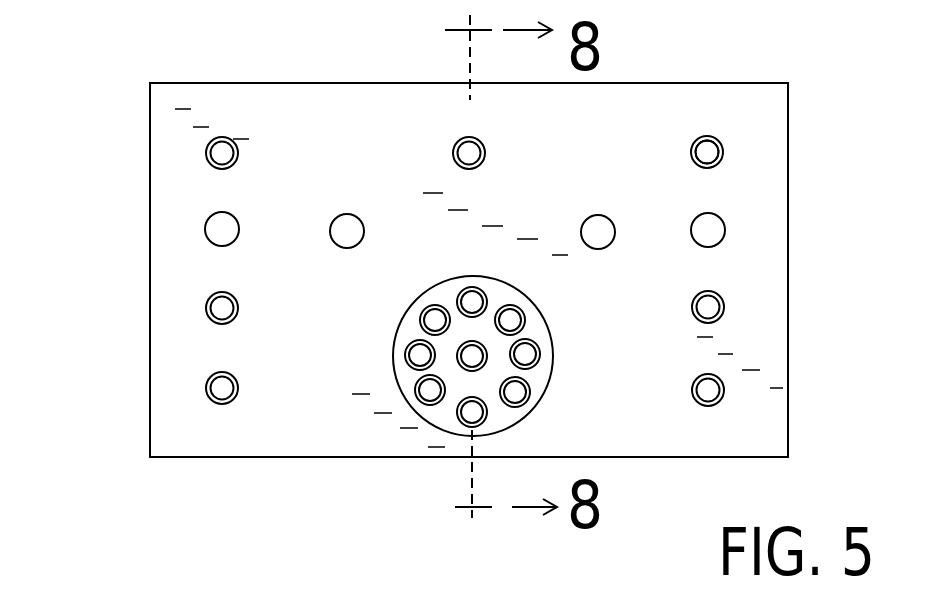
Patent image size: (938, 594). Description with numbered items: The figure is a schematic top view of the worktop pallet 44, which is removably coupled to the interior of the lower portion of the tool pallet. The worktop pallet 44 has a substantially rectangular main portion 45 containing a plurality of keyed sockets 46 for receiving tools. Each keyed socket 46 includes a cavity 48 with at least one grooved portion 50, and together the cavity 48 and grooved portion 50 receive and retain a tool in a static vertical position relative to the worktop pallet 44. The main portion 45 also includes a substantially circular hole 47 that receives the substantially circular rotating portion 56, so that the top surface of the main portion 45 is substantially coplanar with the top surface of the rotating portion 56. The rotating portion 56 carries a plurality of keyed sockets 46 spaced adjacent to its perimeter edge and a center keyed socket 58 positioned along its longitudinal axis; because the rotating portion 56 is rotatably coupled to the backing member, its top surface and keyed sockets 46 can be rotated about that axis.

The worktop pallet 44 is at (131, 266).
The main portion 45 is at (790, 358).
The keyed sockets 46 is at (700, 136).
The hole 47 is at (732, 138).
The cavity 48 is at (736, 172).
The grooved portion 50 is at (716, 195).
The rotating portion 56 is at (527, 413).
The center keyed socket 58 is at (465, 367).